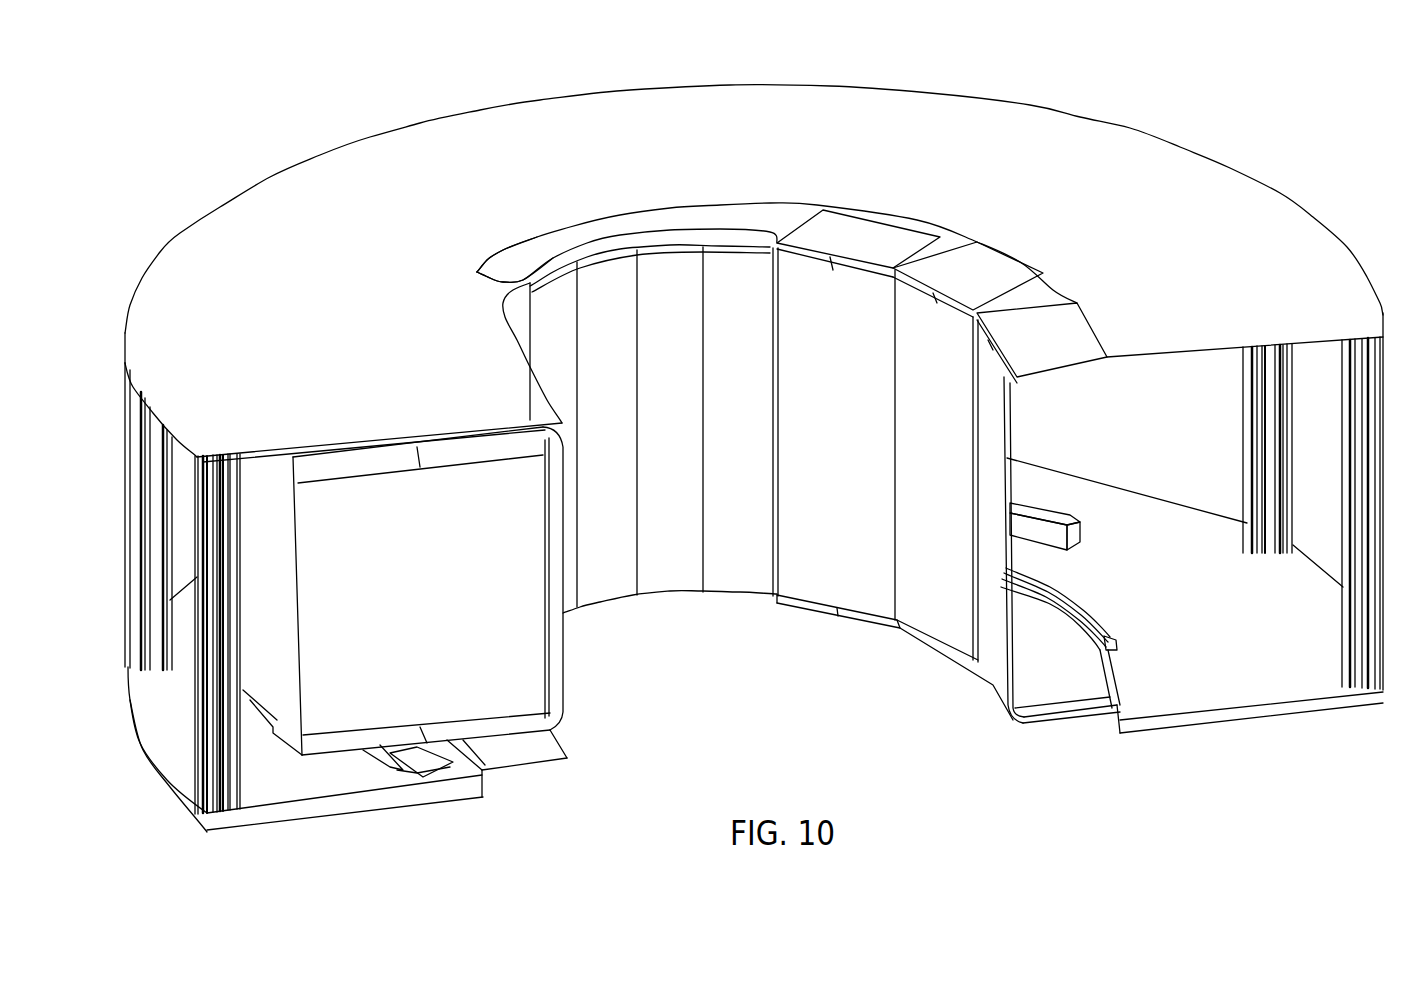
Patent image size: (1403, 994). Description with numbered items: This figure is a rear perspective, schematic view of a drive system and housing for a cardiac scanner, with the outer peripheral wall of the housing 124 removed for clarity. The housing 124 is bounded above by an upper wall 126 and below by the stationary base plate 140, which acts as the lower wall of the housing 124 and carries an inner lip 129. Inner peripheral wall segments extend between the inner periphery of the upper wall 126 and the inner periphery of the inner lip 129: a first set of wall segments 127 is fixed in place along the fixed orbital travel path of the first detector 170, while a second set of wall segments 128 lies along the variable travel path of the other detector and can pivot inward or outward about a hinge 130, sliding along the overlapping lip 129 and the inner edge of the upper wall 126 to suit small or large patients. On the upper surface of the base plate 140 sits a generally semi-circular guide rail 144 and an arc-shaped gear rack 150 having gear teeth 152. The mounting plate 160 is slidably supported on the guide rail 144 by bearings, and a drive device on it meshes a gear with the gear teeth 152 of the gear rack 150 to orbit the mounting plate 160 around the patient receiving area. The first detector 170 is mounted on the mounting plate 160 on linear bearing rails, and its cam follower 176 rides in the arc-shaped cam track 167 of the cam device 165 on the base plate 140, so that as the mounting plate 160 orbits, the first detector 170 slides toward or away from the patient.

The housing 124 is at (1135, 122).
The upper wall 126 is at (1150, 220).
The first set of wall segments 127 is at (617, 600).
The second set of wall segments 128 is at (823, 613).
The inner lip 129 is at (1053, 713).
The hinge 130 is at (500, 252).
The base plate 140 is at (1236, 642).
The guide rail 144 is at (1113, 643).
The gear rack 150 is at (1082, 543).
The gear teeth 152 is at (1033, 513).
The mounting plate 160 is at (277, 730).
The cam device 165 is at (387, 767).
The cam track 167 is at (483, 797).
The first detector 170 is at (460, 617).
The cam follower 176 is at (403, 757).